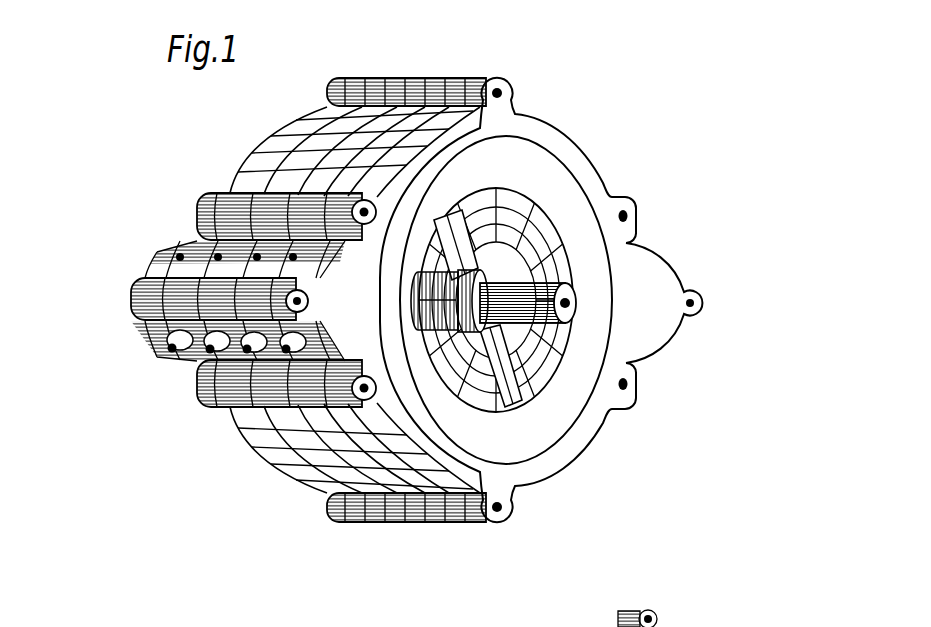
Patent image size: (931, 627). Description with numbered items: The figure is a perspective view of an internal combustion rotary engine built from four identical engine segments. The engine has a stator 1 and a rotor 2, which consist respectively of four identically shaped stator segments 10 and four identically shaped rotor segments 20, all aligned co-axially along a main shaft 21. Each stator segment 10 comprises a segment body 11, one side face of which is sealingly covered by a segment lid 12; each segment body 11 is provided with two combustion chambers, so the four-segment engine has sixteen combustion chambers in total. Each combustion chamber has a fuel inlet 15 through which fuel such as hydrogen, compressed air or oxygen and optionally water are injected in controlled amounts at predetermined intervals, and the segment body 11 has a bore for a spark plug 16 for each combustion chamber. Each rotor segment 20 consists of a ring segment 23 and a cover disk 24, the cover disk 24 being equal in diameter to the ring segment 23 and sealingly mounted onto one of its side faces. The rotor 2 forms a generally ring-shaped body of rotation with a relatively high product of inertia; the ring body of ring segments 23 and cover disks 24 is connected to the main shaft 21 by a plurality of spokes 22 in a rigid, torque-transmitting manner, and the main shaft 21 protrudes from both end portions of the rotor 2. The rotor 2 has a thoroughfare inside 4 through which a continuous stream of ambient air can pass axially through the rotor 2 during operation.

The stator 1 is at (521, 124).
The rotor 2 is at (561, 197).
The thoroughfare inside 4 is at (508, 247).
The stator segment 10 is at (272, 139).
The segment body 11 is at (293, 128).
The segment lid 12 is at (305, 148).
The fuel inlet 15 is at (293, 255).
The spark plug 16 is at (286, 347).
The rotor segment 20 is at (600, 408).
The main shaft 21 is at (572, 307).
The spoke 22 is at (457, 257).
The ring segment 23 is at (570, 393).
The cover disk 24 is at (545, 410).